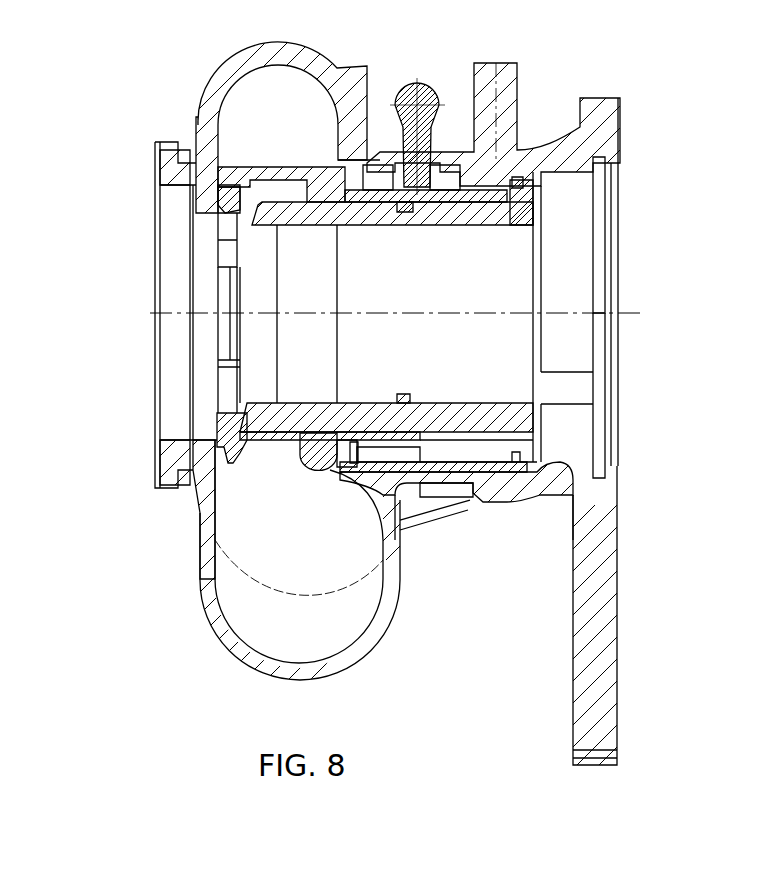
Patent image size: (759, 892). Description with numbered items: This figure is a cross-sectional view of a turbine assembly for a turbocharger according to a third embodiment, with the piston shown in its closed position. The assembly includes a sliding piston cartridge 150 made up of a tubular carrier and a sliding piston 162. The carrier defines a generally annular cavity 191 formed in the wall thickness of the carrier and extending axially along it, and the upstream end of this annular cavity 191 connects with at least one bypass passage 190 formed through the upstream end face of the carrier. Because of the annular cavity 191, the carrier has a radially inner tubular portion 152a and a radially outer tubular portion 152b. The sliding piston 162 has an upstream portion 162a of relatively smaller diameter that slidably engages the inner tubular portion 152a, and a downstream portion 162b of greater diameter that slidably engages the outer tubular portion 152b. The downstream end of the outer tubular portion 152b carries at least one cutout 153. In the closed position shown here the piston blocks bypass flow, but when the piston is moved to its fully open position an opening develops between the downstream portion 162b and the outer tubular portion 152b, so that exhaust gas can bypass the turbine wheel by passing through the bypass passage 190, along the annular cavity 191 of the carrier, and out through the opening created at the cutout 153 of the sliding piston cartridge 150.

The sliding piston cartridge 150 is at (566, 205).
The radially inner tubular portion 152a is at (490, 433).
The radially outer tubular portion 152b is at (583, 130).
The cutout 153 is at (570, 372).
The sliding piston 162 is at (431, 220).
The upstream portion 162a is at (376, 226).
The downstream portion 162b is at (532, 185).
The bypass passage 190 is at (330, 473).
The annular cavity 191 is at (413, 447).